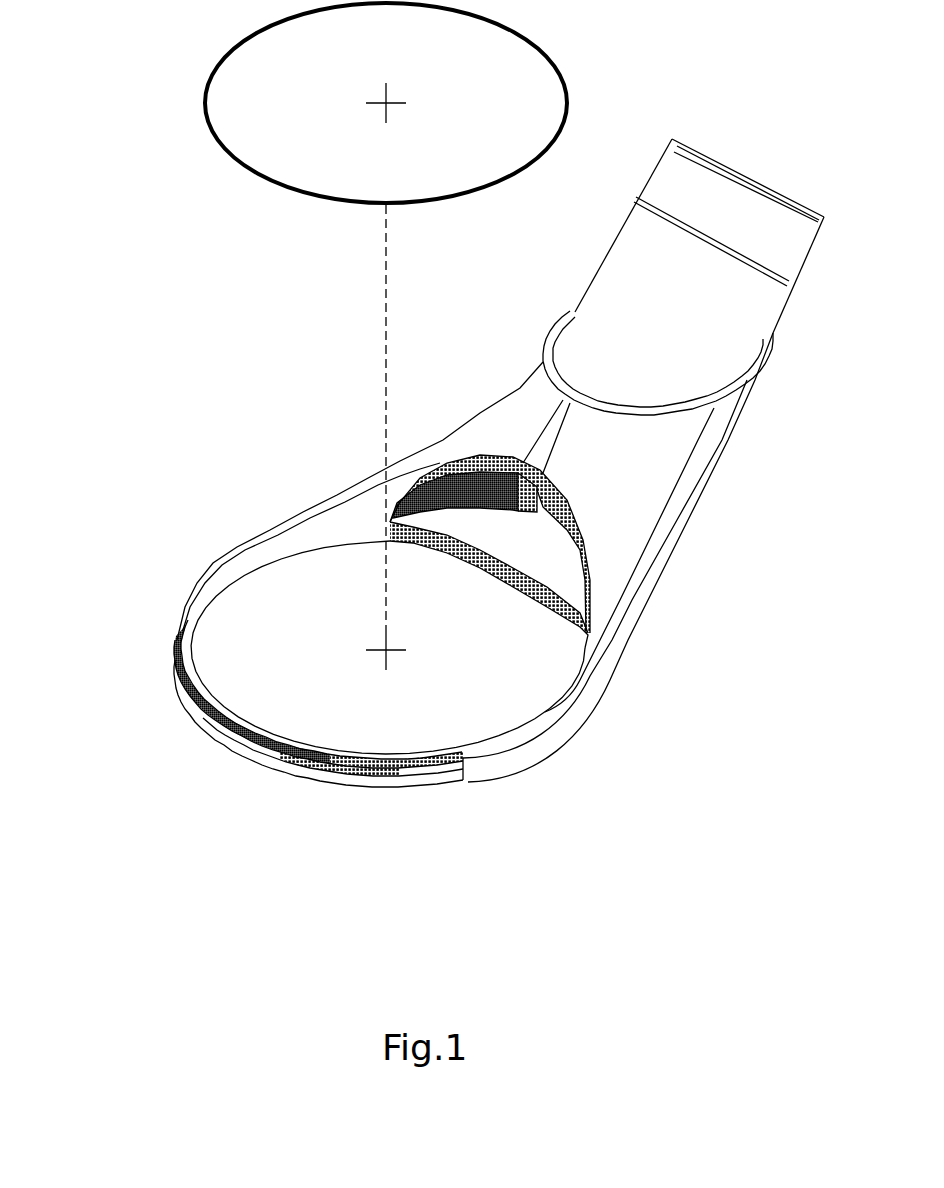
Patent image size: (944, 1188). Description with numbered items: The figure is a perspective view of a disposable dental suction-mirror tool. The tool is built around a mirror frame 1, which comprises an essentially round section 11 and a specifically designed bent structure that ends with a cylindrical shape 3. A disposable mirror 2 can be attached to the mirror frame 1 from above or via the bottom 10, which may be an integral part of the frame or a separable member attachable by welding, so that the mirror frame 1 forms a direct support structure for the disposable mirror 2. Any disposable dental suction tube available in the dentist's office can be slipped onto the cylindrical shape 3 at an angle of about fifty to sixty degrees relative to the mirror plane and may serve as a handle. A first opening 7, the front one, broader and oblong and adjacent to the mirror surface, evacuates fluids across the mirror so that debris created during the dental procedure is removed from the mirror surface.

The mirror frame 1 is at (437, 403).
The disposable mirror 2 is at (205, 103).
The cylindrical shape 3 is at (762, 178).
The first opening 7 is at (535, 535).
The bottom 10 is at (438, 713).
The round section 11 is at (175, 650).